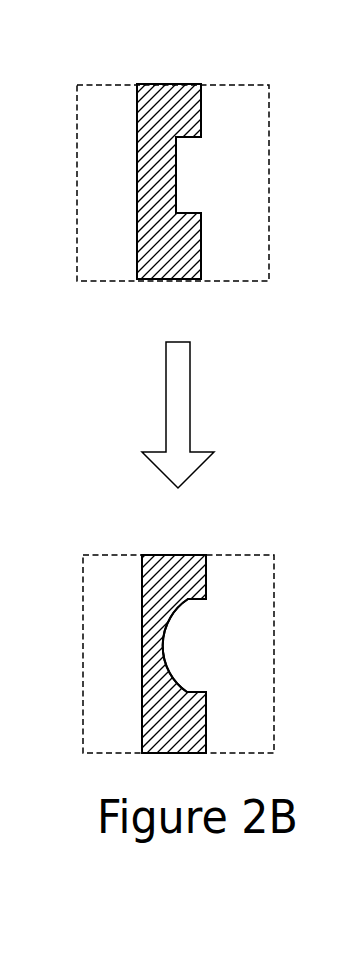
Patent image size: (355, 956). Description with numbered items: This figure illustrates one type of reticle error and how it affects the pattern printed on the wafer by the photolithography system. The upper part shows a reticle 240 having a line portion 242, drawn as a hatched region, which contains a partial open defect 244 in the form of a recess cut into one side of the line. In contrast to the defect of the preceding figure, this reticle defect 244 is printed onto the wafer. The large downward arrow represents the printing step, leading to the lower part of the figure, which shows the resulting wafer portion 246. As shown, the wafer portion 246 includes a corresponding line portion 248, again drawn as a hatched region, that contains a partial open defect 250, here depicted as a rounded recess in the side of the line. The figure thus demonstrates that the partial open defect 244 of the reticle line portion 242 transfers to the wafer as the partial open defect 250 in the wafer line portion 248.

The substrate block with stepped recess 240 is at (177, 84).
The line portion 242 is at (203, 252).
The partial open defect 244 is at (193, 177).
The wafer portion 246 is at (182, 555).
The line portion 248 is at (206, 723).
The partial open defect 250 is at (213, 637).